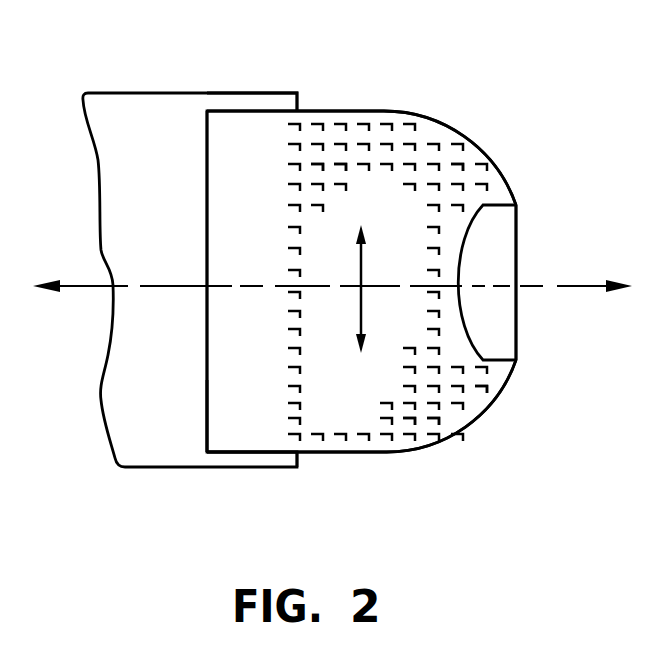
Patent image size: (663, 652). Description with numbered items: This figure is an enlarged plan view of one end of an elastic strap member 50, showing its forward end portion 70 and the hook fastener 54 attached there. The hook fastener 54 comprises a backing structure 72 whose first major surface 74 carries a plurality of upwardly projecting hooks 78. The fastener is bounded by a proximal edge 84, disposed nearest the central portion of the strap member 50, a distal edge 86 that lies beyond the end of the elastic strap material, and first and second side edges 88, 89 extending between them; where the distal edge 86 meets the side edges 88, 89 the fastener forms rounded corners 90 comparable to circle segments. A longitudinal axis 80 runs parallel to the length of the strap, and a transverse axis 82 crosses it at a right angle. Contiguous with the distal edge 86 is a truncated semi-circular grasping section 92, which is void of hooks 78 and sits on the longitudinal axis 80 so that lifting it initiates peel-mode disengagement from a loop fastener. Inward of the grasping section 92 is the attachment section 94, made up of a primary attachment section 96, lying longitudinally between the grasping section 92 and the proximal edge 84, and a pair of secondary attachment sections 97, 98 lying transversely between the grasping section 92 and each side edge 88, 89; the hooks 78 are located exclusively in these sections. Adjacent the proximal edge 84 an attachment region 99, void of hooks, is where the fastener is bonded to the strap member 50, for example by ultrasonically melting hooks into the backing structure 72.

The strap member 50 is at (76, 110).
The forward end portion 70 is at (172, 93).
The hook fastener 54 is at (233, 110).
The first major surface 74 is at (260, 427).
The backing structure 72 is at (235, 340).
The proximal edge 84 is at (205, 430).
The attachment region 99 is at (230, 388).
The first side edge 88 is at (380, 110).
The second side edge 89 is at (352, 455).
The rounded corner 90 is at (458, 124).
The distal edge 86 is at (518, 228).
The grasping section 92 is at (498, 323).
The attachment section 94 is at (354, 133).
The primary attachment section 96 is at (333, 177).
The secondary attachment section 97 is at (472, 172).
The secondary attachment section 98 is at (487, 393).
The hooks 78 is at (441, 414).
The transverse axis 82 is at (357, 270).
The longitudinal axis 80 is at (583, 286).